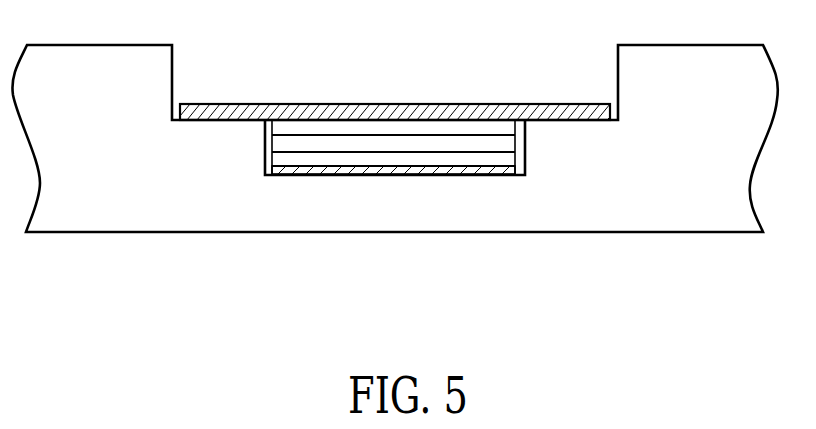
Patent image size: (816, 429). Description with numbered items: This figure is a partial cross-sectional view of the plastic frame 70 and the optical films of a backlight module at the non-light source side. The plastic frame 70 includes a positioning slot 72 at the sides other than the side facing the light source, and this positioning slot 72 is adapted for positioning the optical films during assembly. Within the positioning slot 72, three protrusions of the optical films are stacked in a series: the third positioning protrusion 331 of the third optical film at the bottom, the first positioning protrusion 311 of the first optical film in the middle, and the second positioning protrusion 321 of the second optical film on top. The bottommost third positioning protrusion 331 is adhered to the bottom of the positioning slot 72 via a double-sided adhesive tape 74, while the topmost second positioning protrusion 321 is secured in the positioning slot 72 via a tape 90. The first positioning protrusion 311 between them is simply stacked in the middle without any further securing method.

The plastic frame 70 is at (88, 210).
The positioning slot 72 is at (267, 155).
The double-sided adhesive tape 74 is at (348, 175).
The tape 90 is at (553, 104).
The first positioning protrusion 311 is at (433, 143).
The second positioning protrusion 321 is at (473, 128).
The third positioning protrusion 331 is at (383, 160).